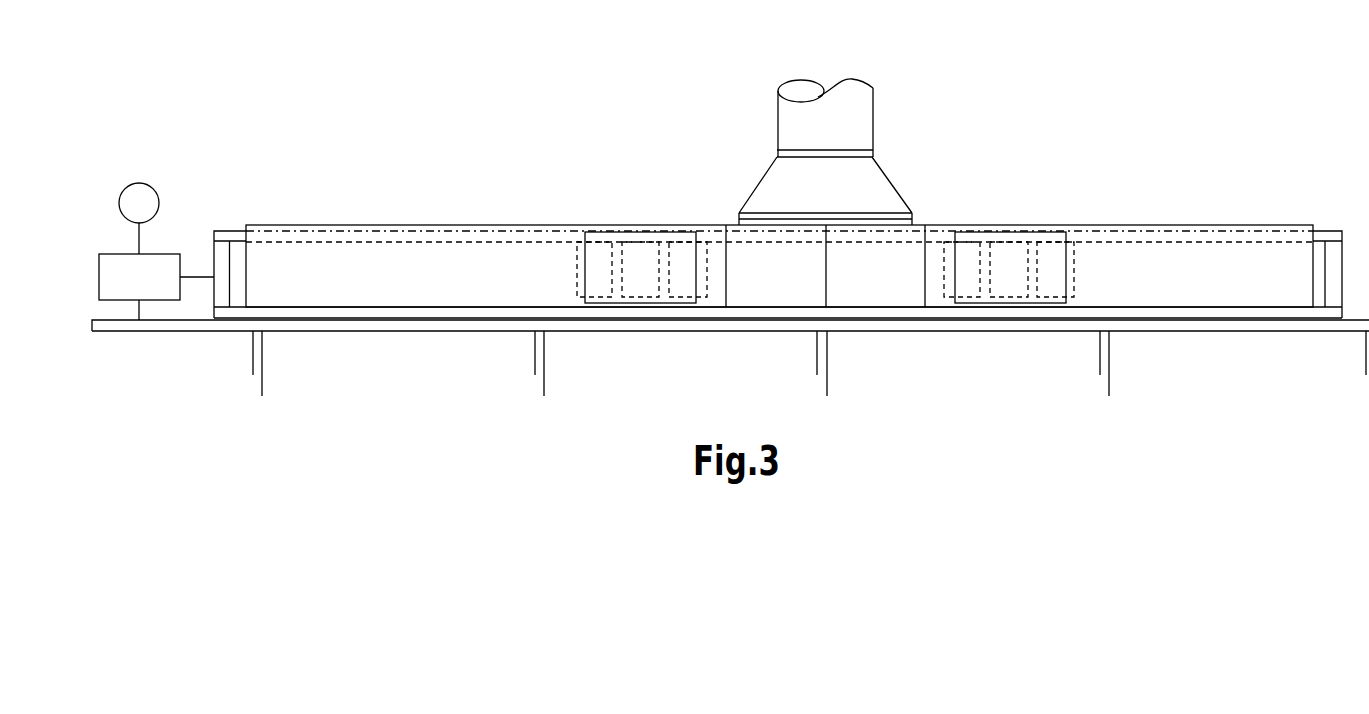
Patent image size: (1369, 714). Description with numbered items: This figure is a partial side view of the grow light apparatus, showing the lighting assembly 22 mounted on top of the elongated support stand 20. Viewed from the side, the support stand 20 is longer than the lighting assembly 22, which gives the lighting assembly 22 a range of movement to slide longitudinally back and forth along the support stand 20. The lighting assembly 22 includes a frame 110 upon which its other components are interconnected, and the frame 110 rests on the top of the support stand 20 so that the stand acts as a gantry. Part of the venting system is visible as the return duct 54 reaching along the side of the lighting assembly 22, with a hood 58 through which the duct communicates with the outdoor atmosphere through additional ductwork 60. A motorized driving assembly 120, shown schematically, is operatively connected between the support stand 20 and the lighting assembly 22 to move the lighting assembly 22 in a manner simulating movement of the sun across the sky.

The support stand 20 is at (292, 333).
The lighting assembly 22 is at (757, 218).
The return duct 54 is at (425, 269).
The hood 58 is at (760, 185).
The additional ductwork 60 is at (778, 117).
The frame 110 is at (213, 252).
The motorized driving assembly 120 is at (156, 251).